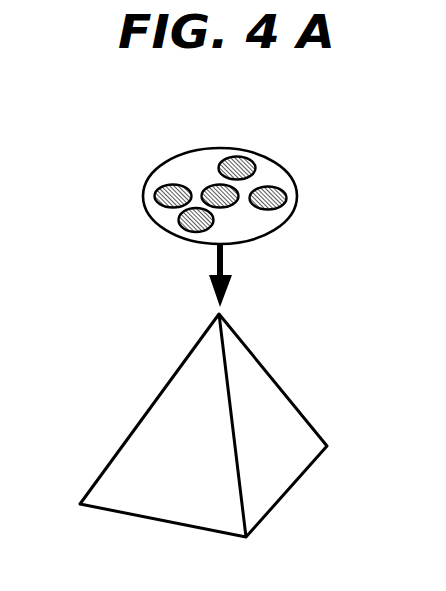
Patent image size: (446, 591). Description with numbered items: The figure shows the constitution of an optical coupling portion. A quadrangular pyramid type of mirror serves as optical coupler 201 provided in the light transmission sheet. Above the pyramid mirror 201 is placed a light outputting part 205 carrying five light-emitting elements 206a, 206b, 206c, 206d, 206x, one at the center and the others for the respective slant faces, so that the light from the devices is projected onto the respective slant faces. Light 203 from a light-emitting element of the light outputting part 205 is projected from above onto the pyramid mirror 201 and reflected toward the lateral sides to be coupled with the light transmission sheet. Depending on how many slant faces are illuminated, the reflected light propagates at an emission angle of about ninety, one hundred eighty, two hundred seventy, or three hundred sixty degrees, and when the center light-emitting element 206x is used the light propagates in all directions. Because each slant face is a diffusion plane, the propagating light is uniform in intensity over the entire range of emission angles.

The optical coupler 201 is at (277, 410).
The light 203 is at (233, 287).
The light outputting part 205 is at (270, 225).
The light-emitting element 206a is at (157, 200).
The light-emitting element 206b is at (182, 225).
The light-emitting element 206c is at (247, 156).
The light-emitting element 206d is at (283, 192).
The center light-emitting element 206x is at (216, 184).